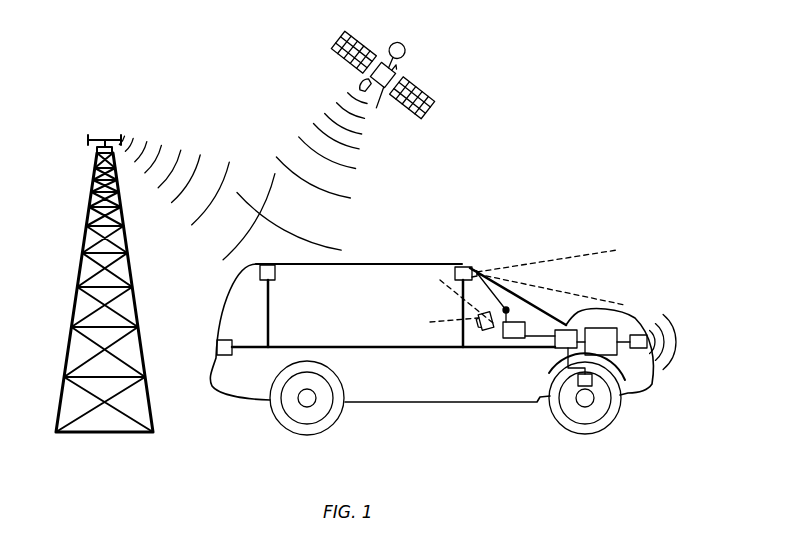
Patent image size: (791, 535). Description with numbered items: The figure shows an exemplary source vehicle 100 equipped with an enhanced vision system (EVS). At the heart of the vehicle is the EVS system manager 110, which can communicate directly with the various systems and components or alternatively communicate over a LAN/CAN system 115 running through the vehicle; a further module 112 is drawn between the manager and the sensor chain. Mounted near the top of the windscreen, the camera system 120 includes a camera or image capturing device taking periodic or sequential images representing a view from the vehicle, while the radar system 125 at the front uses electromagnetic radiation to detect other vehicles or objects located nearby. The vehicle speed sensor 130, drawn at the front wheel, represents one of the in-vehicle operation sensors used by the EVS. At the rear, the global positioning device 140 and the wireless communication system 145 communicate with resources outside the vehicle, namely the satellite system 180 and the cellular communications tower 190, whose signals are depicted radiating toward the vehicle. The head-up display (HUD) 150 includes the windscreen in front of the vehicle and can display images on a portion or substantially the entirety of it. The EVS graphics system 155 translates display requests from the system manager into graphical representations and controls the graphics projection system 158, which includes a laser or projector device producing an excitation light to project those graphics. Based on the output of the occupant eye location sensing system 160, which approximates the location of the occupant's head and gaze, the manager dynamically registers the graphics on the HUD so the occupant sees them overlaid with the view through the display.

The source vehicle 100 is at (402, 263).
The EVS system manager 110 is at (614, 353).
The processing module 112 is at (568, 330).
The LAN/CAN system 115 is at (297, 347).
The camera system 120 is at (465, 265).
The radar system 125 is at (648, 340).
The vehicle speed sensor 130 is at (592, 380).
The global positioning device 140 is at (217, 347).
The wireless communication system 145 is at (260, 272).
The head-up display (HUD) 150 is at (524, 303).
The EVS graphics system 155 is at (517, 340).
The graphics projection system 158 is at (510, 305).
The occupant eye location sensing system 160 is at (488, 337).
The satellite system 180 is at (358, 82).
The cellular communications tower 190 is at (82, 253).